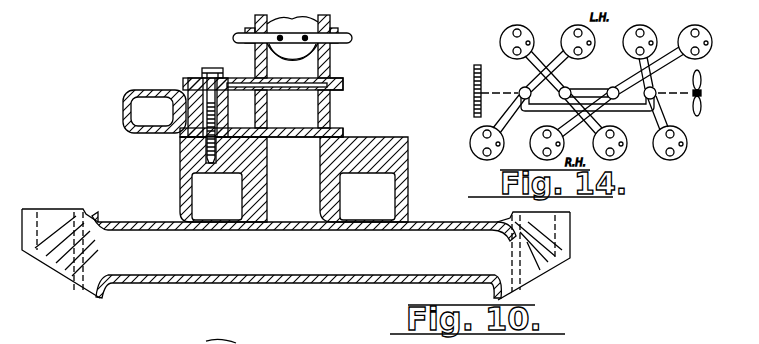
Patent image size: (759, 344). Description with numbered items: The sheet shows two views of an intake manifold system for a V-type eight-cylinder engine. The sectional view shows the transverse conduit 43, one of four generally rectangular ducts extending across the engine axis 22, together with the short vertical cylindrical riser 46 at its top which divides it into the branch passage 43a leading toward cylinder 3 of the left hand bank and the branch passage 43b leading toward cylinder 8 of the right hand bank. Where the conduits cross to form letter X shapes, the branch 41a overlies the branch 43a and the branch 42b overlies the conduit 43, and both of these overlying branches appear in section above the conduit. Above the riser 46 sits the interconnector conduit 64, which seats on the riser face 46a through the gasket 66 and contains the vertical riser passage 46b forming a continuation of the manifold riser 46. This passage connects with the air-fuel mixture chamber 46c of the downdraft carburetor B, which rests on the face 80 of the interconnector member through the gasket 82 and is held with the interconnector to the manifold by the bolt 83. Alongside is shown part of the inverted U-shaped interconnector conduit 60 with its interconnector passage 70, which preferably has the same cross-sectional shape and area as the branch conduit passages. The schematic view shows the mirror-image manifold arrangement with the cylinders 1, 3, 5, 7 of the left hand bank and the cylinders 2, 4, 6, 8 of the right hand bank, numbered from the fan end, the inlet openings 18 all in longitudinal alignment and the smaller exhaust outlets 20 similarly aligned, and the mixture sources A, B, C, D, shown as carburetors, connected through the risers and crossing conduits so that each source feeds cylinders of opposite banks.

In FIG. 10, the conduit 43 is at (221, 268).
In FIG. 10, the branch passage 43a is at (160, 262).
In FIG. 10, the branch passage 43b is at (447, 260).
In FIG. 10, the cylinder 3 is at (61, 254).
In FIG. 14, the cylinder 3 is at (640, 42).
In FIG. 10, the riser passage 46 is at (300, 179).
In FIG. 10, the branch passage 41a is at (230, 200).
In FIG. 10, the branch passage 42b is at (380, 200).
In FIG. 10, the gasket 66 is at (334, 128).
In FIG. 10, the air-fuel mixture chamber 46c is at (305, 75).
In FIG. 10, the vertical riser passage 46b is at (310, 118).
In FIG. 10, the riser face 46a is at (373, 136).
In FIG. 10, the interconnector conduit 64 is at (341, 100).
In FIG. 10, the gasket 82 is at (257, 76).
In FIG. 10, the face 80 is at (267, 72).
In FIG. 10, the bolt 83 is at (187, 90).
In FIG. 10, the interconnector passage 70 is at (103, 104).
In FIG. 10, the interconnector conduit 60 is at (128, 111).
In FIG. 14, the cylinder 1 is at (695, 42).
In FIG. 14, the cylinder 2 is at (670, 143).
In FIG. 14, the cylinder 4 is at (610, 143).
In FIG. 14, the cylinder 5 is at (578, 42).
In FIG. 14, the cylinder 6 is at (547, 143).
In FIG. 14, the cylinder 7 is at (517, 42).
In FIG. 14, the cylinder 8 is at (487, 143).
In FIG. 14, the inlet opening 18 is at (512, 50).
In FIG. 14, the exhaust outlet 20 is at (522, 33).
In FIG. 14, the longitudinal axis 22 is at (531, 45).
In FIG. 10, the source B is at (533, 256).
In FIG. 14, the source B is at (521, 88).
In FIG. 10, the source C is at (294, 342).
In FIG. 14, the source C is at (582, 73).
In FIG. 14, the source A is at (612, 86).
In FIG. 14, the source D is at (656, 88).